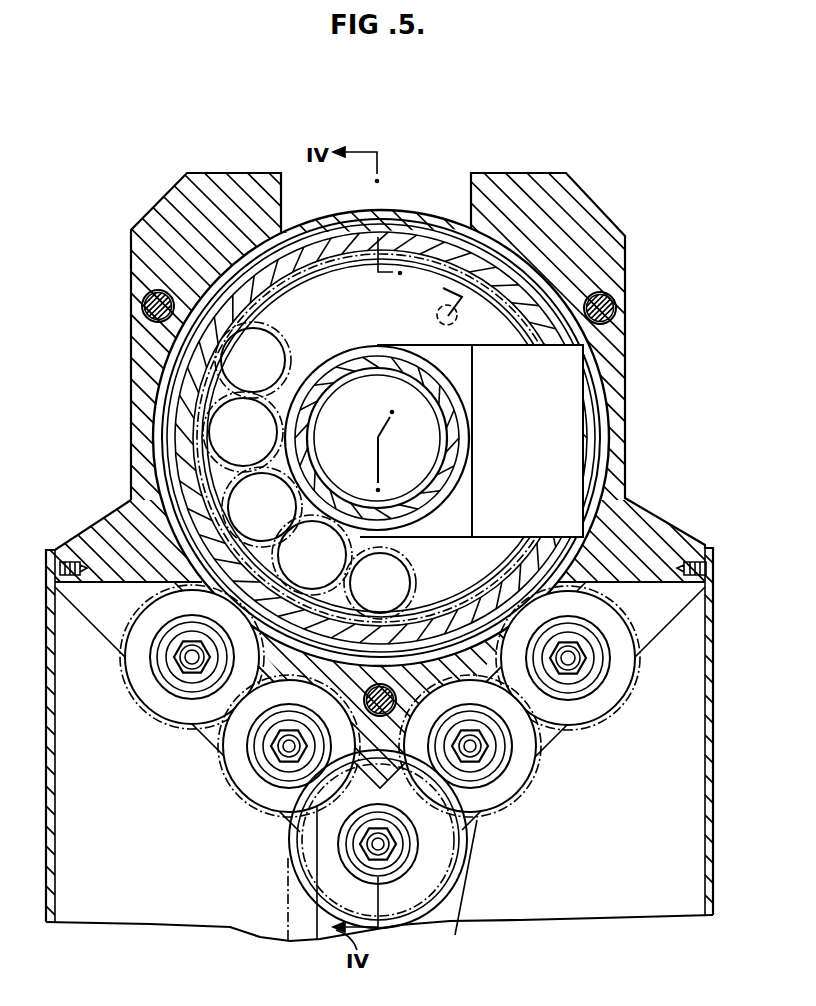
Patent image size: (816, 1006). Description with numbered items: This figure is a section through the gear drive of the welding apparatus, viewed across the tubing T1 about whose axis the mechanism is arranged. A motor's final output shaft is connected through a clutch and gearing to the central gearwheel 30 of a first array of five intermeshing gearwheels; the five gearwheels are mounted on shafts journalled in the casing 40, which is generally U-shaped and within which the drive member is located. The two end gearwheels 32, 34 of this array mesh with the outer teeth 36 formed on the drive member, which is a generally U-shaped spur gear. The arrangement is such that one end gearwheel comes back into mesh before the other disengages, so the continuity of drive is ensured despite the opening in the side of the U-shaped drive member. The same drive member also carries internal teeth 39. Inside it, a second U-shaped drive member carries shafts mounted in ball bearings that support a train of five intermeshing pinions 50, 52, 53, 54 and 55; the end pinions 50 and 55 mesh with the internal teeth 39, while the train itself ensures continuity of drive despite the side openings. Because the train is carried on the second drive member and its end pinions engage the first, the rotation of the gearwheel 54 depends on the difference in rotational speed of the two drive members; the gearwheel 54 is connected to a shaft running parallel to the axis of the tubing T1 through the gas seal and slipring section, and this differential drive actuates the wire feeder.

The central gearwheel 30 is at (340, 875).
The end gearwheel 32 is at (183, 703).
The end gearwheel 34 is at (578, 705).
The outer teeth 36 is at (176, 478).
The internal teeth 39 is at (514, 525).
The casing 40 is at (632, 528).
The pinion 50 is at (407, 580).
The pinion 52 is at (337, 546).
The pinion 53 is at (240, 500).
The gearwheel 54 is at (220, 423).
The pinion 55 is at (300, 343).
The tubing T1 is at (458, 437).